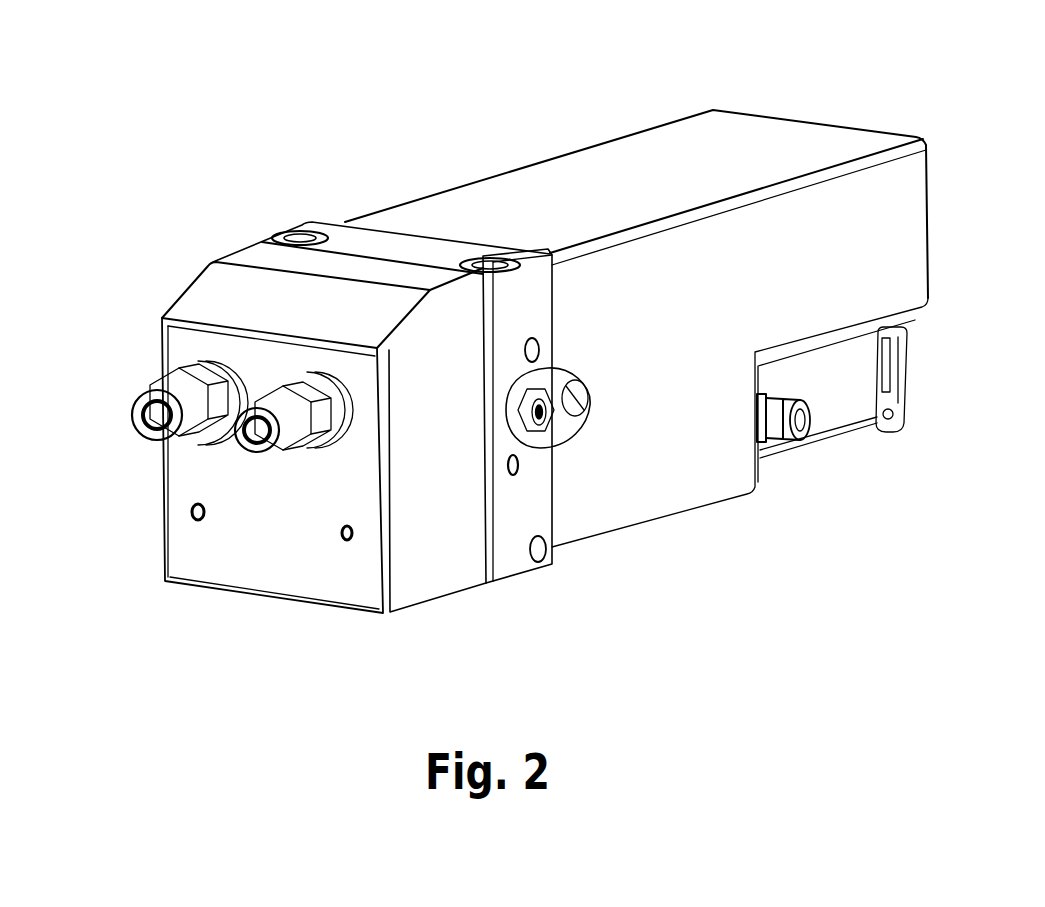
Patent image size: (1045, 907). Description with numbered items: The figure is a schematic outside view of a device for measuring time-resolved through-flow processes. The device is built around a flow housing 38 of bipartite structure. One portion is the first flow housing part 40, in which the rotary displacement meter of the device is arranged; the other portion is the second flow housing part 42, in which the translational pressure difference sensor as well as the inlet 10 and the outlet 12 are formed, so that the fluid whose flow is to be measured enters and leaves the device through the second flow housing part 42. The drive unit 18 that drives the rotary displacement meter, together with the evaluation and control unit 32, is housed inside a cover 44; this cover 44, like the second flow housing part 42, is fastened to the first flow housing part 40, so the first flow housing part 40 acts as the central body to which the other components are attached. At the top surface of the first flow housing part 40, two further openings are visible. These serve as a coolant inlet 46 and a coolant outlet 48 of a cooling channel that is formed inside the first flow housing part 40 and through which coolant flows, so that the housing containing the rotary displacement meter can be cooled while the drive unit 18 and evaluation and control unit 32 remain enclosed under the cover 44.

The inlet 10 is at (253, 430).
The outlet 12 is at (155, 412).
The drive unit 18 is at (535, 207).
The evaluation and control unit 32 is at (787, 456).
The flow housing 38 is at (287, 218).
The first flow housing part 40 is at (517, 560).
The second flow housing part 42 is at (196, 292).
The cover 44 is at (637, 160).
The coolant inlet 46 is at (274, 238).
The coolant outlet 48 is at (489, 258).